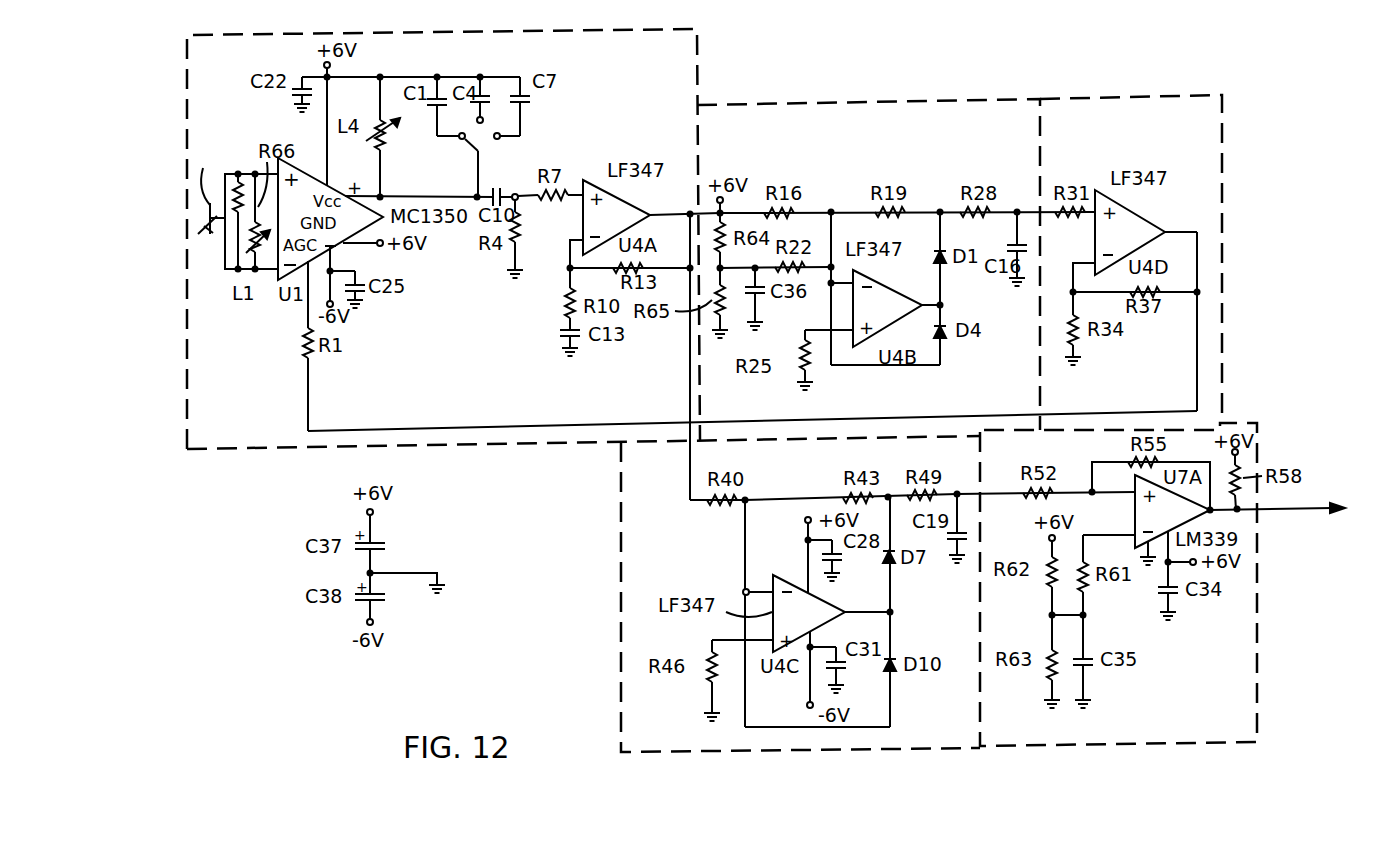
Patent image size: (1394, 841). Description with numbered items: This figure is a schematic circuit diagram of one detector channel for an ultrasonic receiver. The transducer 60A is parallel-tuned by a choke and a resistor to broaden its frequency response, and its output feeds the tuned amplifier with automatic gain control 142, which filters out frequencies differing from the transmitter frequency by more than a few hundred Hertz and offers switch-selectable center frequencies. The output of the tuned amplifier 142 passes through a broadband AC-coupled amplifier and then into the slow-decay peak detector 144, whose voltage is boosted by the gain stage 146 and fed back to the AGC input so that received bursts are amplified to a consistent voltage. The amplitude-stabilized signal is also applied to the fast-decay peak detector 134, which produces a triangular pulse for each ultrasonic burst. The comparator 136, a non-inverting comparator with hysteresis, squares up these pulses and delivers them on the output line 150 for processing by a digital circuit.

The transducer 60A is at (210, 191).
The tuned amplifier with automatic gain control 142 is at (583, 239).
The peak detector 144 is at (868, 264).
The amplifier stage 146 is at (1131, 259).
The peak detector 134 is at (800, 597).
The comparator 136 is at (1118, 584).
The output line 150 is at (1298, 519).